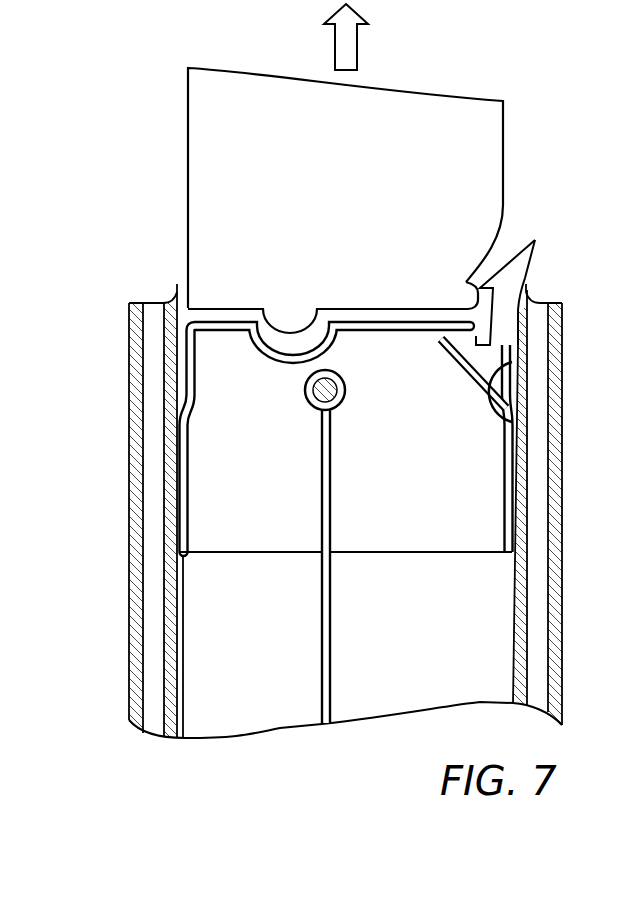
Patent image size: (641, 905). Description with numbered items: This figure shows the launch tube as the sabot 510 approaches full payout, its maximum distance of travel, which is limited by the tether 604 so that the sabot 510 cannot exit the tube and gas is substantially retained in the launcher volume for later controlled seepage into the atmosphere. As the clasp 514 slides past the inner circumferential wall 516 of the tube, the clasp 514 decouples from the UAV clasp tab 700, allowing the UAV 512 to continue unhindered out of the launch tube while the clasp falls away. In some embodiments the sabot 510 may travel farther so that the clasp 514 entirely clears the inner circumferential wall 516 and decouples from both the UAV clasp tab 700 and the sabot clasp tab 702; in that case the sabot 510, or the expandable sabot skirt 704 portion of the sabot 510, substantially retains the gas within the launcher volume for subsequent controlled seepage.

The UAV 512 is at (208, 120).
The sabot 510 is at (186, 392).
The UAV clasp tab 700 is at (472, 280).
The clasp 514 is at (527, 262).
The sabot clasp tab 702 is at (478, 329).
The inner circumferential wall 516 is at (510, 405).
The expandable sabot skirt 704 is at (512, 527).
The tether 604 is at (322, 698).